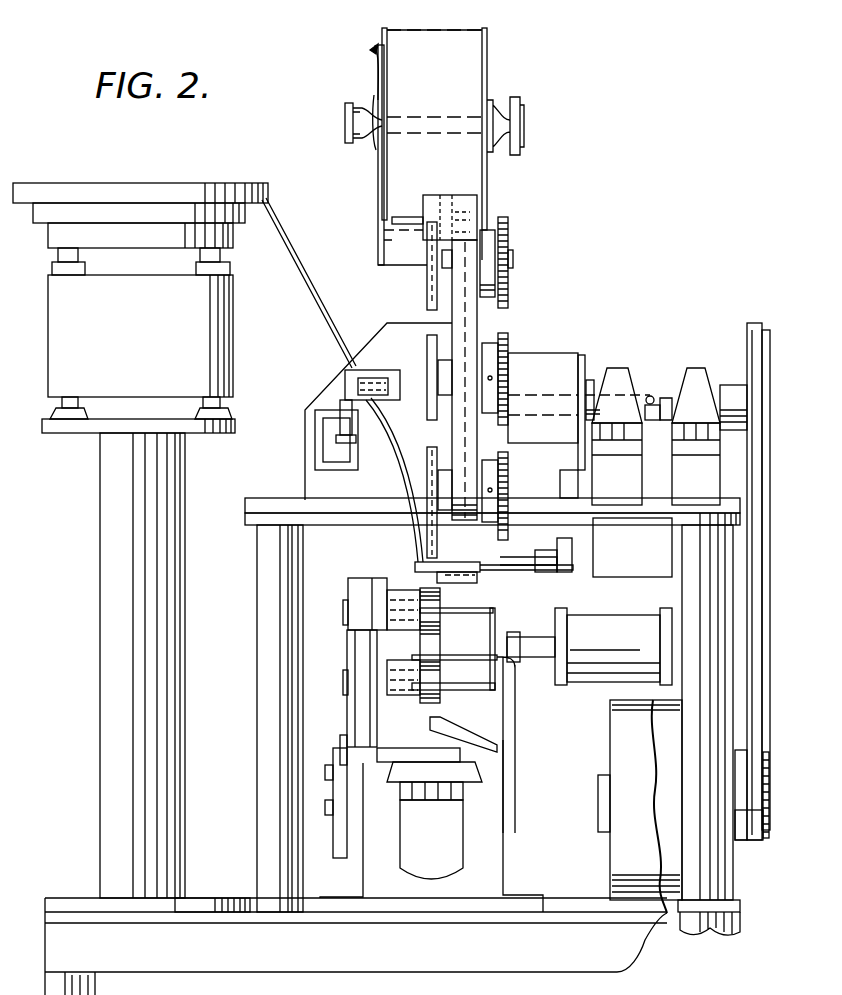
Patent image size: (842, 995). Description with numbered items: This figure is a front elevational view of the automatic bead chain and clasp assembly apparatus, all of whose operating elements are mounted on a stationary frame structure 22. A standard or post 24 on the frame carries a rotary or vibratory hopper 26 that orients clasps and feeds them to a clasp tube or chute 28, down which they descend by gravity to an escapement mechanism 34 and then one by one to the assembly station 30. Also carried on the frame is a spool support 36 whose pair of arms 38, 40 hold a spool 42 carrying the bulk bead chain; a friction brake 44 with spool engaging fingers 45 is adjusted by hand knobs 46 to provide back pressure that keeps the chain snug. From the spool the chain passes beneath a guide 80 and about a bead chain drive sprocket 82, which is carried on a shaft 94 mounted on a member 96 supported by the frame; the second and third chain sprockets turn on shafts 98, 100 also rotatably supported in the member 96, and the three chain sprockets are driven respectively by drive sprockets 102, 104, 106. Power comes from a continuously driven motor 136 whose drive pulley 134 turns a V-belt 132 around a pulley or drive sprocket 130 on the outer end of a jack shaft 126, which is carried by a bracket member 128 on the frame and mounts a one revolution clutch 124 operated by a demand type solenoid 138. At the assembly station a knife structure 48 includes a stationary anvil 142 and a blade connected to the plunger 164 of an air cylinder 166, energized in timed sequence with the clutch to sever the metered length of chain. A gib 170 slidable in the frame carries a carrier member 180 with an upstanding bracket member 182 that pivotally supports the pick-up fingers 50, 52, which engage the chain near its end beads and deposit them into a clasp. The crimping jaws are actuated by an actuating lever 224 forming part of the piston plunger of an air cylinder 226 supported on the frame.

The stationary frame structure 22 is at (80, 897).
The standard or post 24 is at (187, 455).
The rotary or vibratory hopper 26 is at (262, 185).
The clasp tube or chute 28 is at (310, 275).
The assembly station 30 is at (414, 560).
The escapement mechanism 34 is at (380, 368).
The spool support 36 is at (403, 266).
The arm 38 is at (489, 182).
The arm 40 is at (378, 176).
The spool 42 is at (487, 64).
The friction brake 44 is at (370, 90).
The spool engaging fingers 45 is at (376, 52).
The hand knobs 46 is at (348, 102).
The knife structure 48 is at (494, 584).
The pick-up finger 50 is at (410, 588).
The pick-up finger 52 is at (442, 708).
The guide 80 is at (418, 215).
The bead chain drive sprocket 82 is at (392, 230).
The shaft 94 is at (514, 258).
The member 96 is at (478, 332).
The shaft 98 is at (500, 378).
The shaft 100 is at (500, 488).
The drive sprocket 102 is at (510, 222).
The drive sprocket 104 is at (510, 345).
The drive sprocket 106 is at (508, 470).
The one revolution clutch 124 is at (582, 352).
The jack shaft 126 is at (652, 398).
The bracket member 128 is at (652, 470).
The pulley or drive sprocket 130 is at (748, 330).
The V-belt 132 is at (763, 570).
The drive pulley 134 is at (768, 840).
The motor 136 is at (610, 855).
The solenoid 138 is at (596, 490).
The stationary anvil 142 is at (458, 562).
The plunger 164 is at (578, 570).
The air cylinder 166 is at (665, 578).
The gib 170 is at (392, 800).
The carrier member 180 is at (418, 748).
The bracket member 182 is at (428, 615).
The actuating lever 224 is at (548, 660).
The air cylinder 226 is at (603, 690).